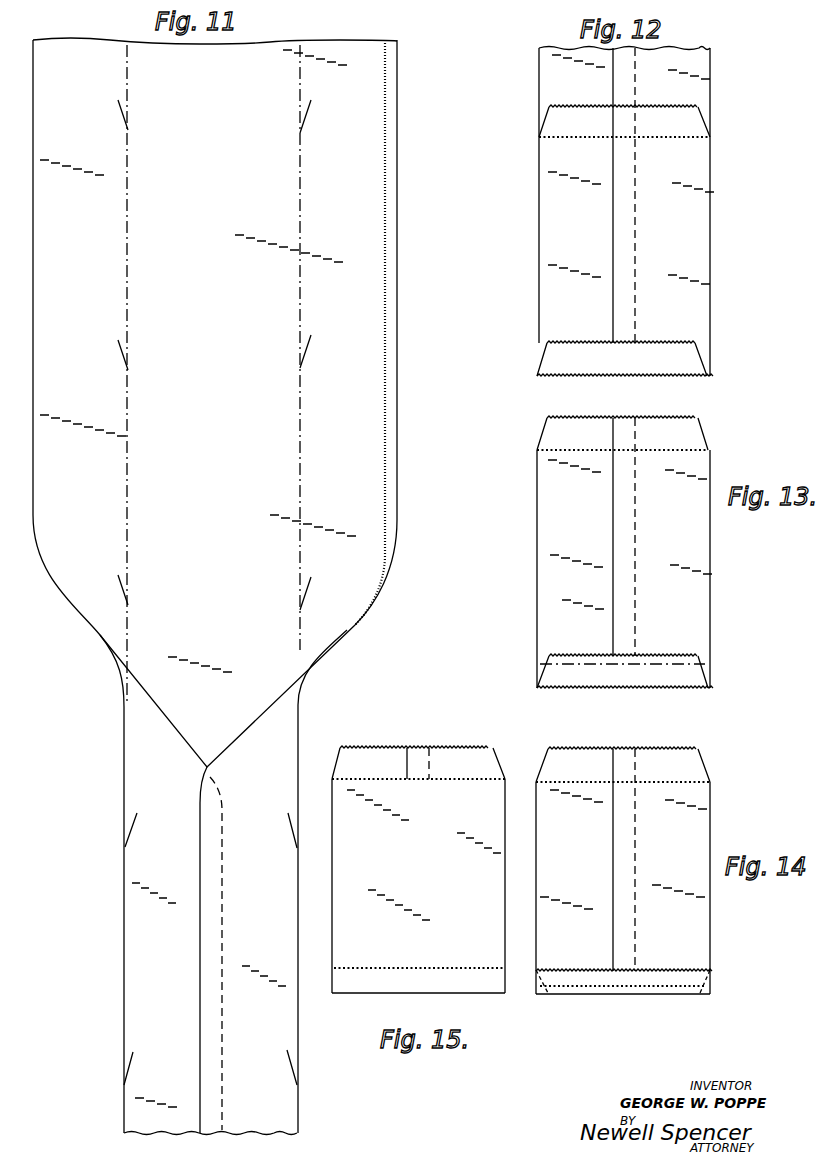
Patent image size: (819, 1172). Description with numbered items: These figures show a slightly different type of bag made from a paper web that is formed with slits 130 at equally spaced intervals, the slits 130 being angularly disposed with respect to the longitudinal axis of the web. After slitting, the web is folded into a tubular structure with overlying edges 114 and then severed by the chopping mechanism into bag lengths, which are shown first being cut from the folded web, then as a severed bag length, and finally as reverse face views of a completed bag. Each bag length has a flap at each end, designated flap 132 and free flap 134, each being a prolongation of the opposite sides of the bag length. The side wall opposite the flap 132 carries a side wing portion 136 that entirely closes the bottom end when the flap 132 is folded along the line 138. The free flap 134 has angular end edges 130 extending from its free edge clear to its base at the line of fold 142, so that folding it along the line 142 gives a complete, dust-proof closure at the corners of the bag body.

In FIG. 11, the overlying edges 114 is at (208, 803).
In FIG. 12, the overlying edges 114 is at (628, 210).
In FIG. 13, the overlying edges 114 is at (624, 537).
In FIG. 14, the overlying edges 114 is at (625, 852).
In FIG. 11, the slits 130 is at (128, 118).
In FIG. 12, the slits 130 is at (540, 118).
In FIG. 13, the slits 130 is at (537, 442).
In FIG. 14, the slits 130 is at (708, 757).
In FIG. 15, the slits 130 is at (335, 760).
In FIG. 12, the flap 132 is at (689, 374).
In FIG. 13, the flap 132 is at (594, 680).
In FIG. 14, the flap 132 is at (662, 980).
In FIG. 12, the free flap 134 is at (690, 123).
In FIG. 13, the free flap 134 is at (568, 428).
In FIG. 14, the free flap 134 is at (667, 752).
In FIG. 15, the free flap 134 is at (460, 757).
In FIG. 12, the side wing portion 136 is at (705, 110).
In FIG. 13, the side wing portion 136 is at (709, 668).
In FIG. 14, the side wing portion 136 is at (714, 988).
In FIG. 15, the side wing portion 136 is at (537, 996).
In FIG. 12, the line 138 is at (650, 107).
In FIG. 13, the line 138 is at (556, 424).
In FIG. 14, the line 138 is at (580, 996).
In FIG. 15, the line 138 is at (378, 748).
In FIG. 12, the line of fold 142 is at (668, 142).